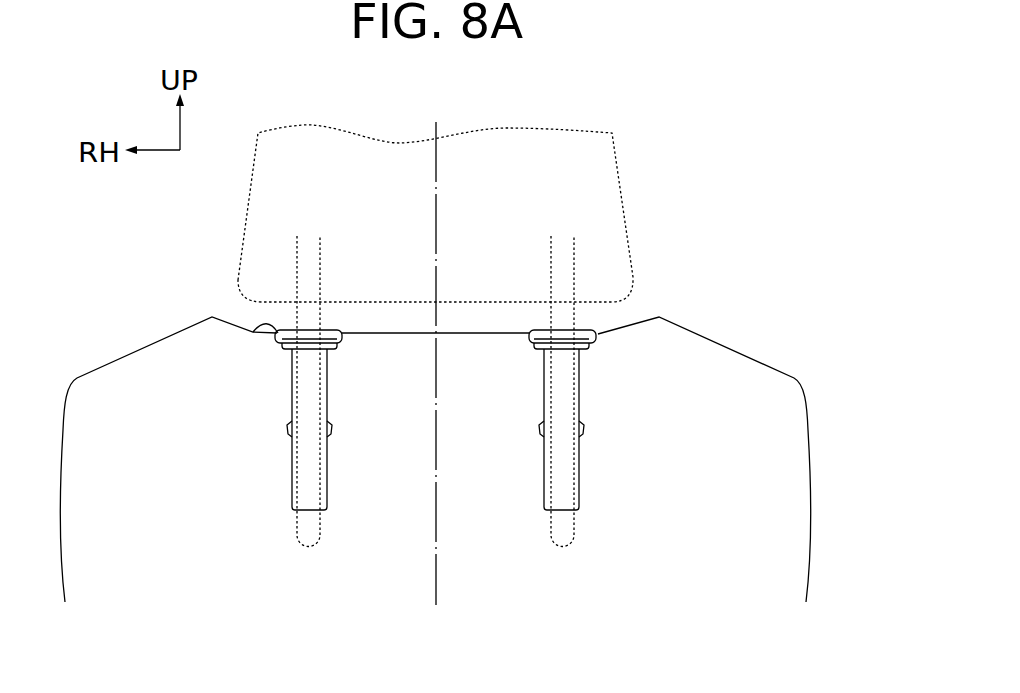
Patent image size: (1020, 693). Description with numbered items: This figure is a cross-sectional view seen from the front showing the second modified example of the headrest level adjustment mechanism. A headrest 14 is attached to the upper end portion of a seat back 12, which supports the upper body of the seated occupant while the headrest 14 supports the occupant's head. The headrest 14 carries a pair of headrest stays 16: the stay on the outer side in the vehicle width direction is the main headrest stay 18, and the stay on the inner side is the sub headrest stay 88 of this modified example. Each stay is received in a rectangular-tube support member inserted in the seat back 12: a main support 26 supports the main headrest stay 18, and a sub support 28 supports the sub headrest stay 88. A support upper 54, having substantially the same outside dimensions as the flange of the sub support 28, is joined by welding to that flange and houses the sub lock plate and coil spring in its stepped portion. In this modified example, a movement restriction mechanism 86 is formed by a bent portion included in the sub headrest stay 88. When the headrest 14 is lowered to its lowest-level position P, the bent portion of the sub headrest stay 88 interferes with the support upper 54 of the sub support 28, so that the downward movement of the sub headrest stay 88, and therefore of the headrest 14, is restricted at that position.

The seat back 12 is at (747, 367).
The headrest 14 is at (612, 188).
The headrest stay 16 is at (458, 388).
The main headrest stay 18 is at (565, 531).
The main support 26 is at (590, 396).
The sub support 28 is at (282, 398).
The support upper 54 is at (257, 330).
The movement restriction mechanism 86 is at (218, 294).
The sub headrest stay 88 is at (308, 312).
The lowest-level position P is at (678, 233).